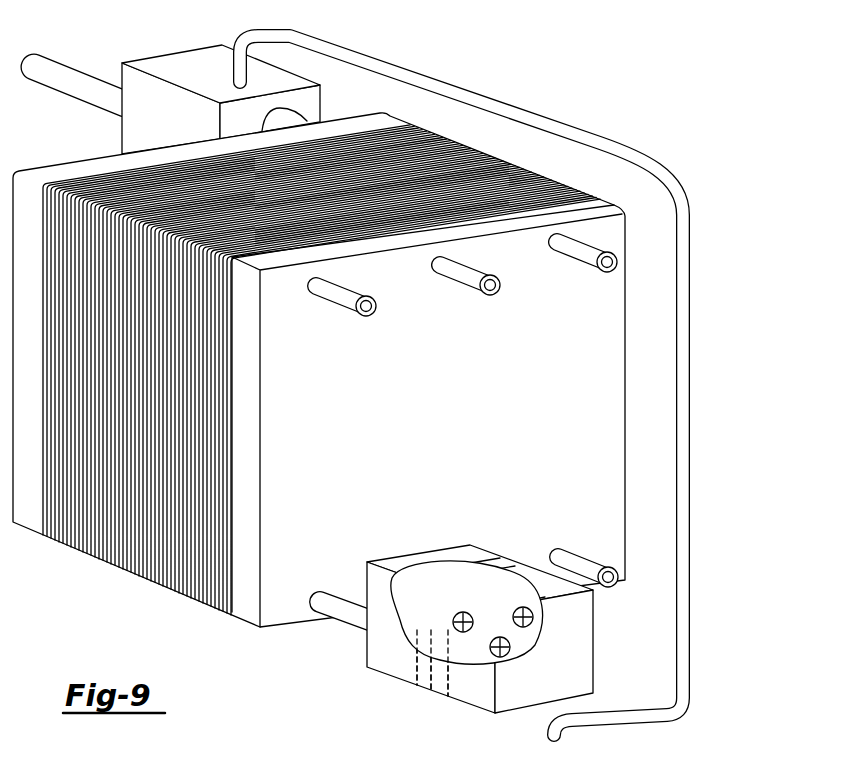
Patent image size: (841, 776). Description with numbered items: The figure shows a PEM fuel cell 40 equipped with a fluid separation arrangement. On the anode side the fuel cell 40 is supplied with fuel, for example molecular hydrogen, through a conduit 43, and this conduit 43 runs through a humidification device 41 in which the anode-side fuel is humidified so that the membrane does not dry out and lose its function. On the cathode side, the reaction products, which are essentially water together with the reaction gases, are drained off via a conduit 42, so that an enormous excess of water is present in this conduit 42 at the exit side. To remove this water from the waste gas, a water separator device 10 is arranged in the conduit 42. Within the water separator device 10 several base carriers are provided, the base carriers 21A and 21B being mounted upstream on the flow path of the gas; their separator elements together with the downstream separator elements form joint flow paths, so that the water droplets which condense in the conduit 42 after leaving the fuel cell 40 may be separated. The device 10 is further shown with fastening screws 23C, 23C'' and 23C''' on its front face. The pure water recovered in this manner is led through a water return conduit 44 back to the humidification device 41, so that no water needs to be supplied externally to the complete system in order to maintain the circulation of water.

The water separator device 10 is at (383, 652).
The base carrier 21A is at (412, 672).
The base carrier 21B is at (410, 682).
The fastener screw 23C is at (446, 598).
The fastener screw 23C'' is at (540, 660).
The fastener screw 23C''' is at (586, 638).
The PEM fuel cell 40 is at (250, 608).
The humidification device 41 is at (200, 62).
The conduit 42 is at (338, 617).
The conduit 43 is at (80, 77).
The water return conduit 44 is at (688, 565).